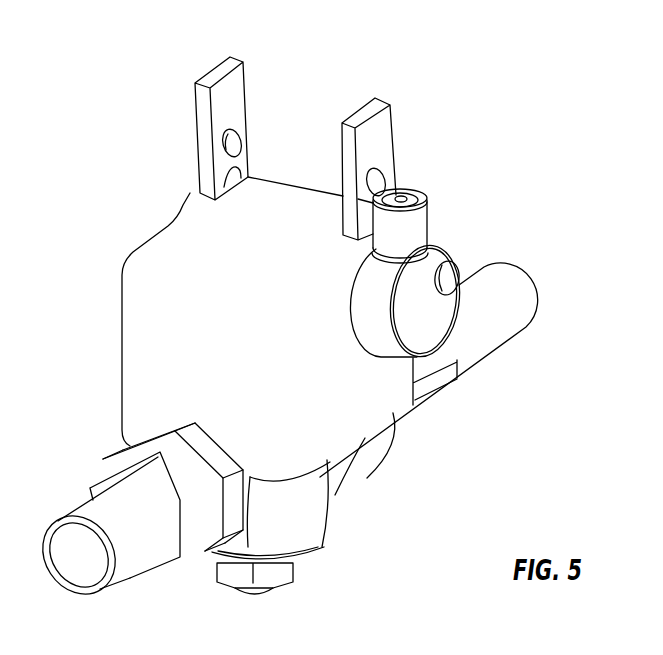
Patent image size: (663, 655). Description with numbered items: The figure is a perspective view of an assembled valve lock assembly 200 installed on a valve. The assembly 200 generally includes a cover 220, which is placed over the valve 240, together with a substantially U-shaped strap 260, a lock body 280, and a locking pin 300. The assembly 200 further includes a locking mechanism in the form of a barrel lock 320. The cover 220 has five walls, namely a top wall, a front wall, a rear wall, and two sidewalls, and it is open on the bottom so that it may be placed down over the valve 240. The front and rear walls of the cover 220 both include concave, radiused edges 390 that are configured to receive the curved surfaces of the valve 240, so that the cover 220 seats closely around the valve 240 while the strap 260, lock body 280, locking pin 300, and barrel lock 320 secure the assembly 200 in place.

The valve lock assembly 200 is at (514, 82).
The cover 220 is at (130, 333).
The valve 240 is at (316, 532).
The U-shaped strap 260 is at (383, 132).
The lock body 280 is at (433, 337).
The locking pin 300 is at (451, 280).
The barrel lock 320 is at (420, 223).
The radiused edges 390 is at (233, 436).